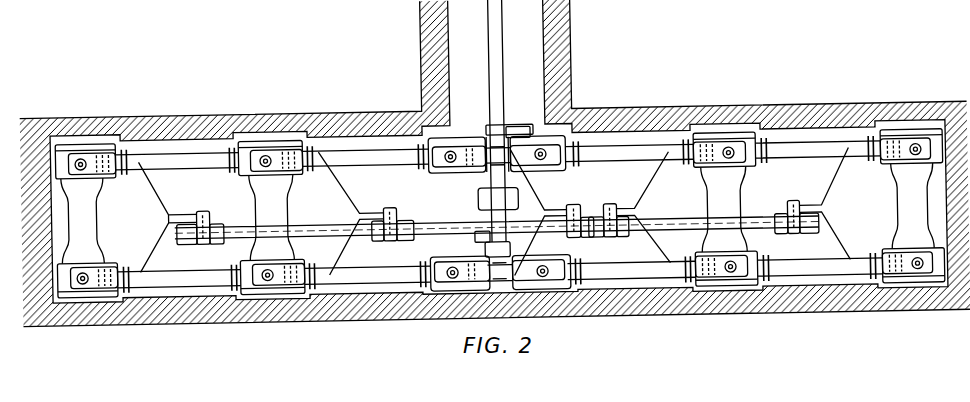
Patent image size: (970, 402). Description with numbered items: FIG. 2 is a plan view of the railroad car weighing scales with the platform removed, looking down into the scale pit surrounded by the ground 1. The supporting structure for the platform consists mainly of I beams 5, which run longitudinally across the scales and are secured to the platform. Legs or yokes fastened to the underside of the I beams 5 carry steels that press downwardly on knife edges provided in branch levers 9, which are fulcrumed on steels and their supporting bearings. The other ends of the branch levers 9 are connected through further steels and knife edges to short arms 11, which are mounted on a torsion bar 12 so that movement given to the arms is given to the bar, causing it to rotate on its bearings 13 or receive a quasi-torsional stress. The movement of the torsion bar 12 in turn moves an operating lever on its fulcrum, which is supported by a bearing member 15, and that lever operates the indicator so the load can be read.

The ground 1 is at (237, 319).
The I beams 5 is at (163, 151).
The branch levers 9 is at (162, 190).
The short arms 11 is at (399, 211).
The torsion bar 12 is at (433, 221).
The bearings 13 is at (417, 239).
The bearing member 15 is at (484, 239).